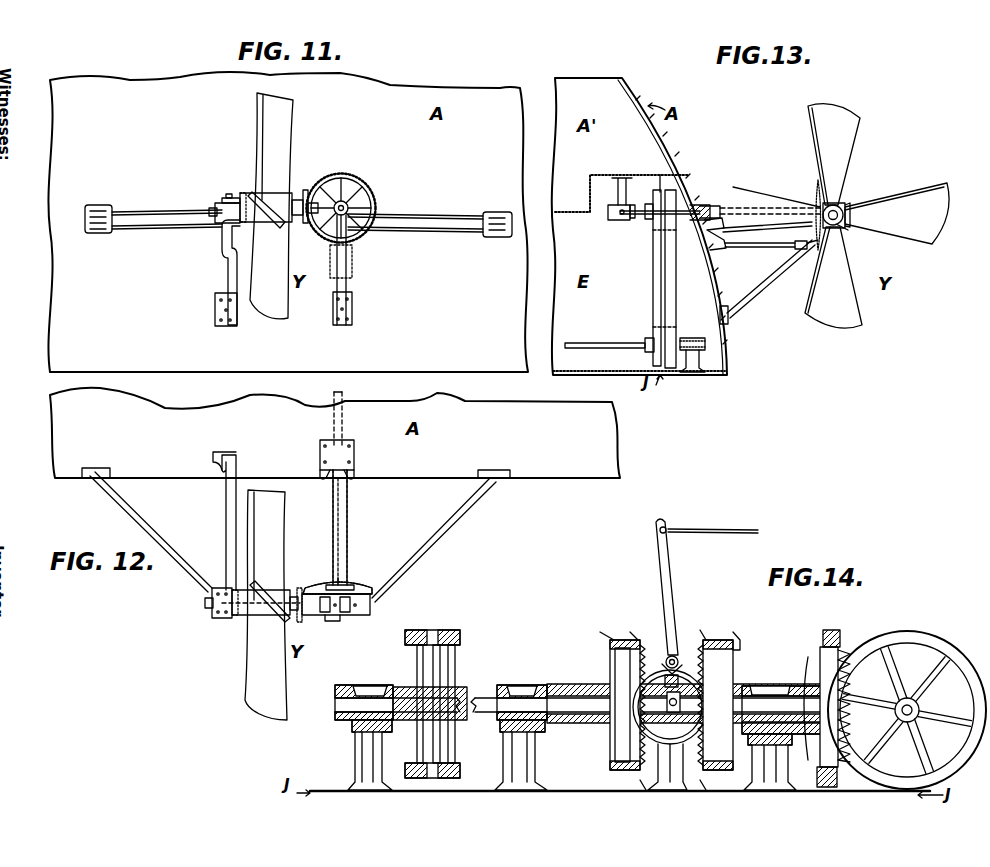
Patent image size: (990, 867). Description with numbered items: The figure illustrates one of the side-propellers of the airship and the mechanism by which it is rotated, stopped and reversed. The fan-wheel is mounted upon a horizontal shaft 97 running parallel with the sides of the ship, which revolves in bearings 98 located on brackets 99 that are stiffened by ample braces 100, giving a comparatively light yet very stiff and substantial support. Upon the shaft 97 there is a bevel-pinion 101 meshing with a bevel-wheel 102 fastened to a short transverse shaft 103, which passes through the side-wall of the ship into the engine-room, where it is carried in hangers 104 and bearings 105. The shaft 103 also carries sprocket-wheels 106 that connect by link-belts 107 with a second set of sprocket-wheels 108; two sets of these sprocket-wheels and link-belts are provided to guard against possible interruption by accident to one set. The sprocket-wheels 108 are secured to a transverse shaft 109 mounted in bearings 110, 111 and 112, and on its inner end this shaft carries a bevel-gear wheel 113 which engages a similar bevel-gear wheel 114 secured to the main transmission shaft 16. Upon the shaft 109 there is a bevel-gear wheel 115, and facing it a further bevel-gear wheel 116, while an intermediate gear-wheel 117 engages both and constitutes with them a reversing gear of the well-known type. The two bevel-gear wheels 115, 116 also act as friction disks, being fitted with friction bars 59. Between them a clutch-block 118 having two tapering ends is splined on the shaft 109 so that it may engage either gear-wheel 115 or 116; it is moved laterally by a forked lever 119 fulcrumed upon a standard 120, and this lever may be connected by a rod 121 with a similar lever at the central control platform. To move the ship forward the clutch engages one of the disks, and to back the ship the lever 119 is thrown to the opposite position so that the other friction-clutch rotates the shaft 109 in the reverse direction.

In FIG. 14, the main power transmission shaft 16 is at (914, 706).
In FIG. 14, the friction bars 59 is at (618, 663).
In FIG. 11, the horizontal shaft 97 is at (214, 206).
In FIG. 13, the horizontal shaft 97 is at (850, 228).
In FIG. 12, the horizontal shaft 97 is at (203, 605).
In FIG. 11, the bearings 98 is at (222, 196).
In FIG. 12, the bearings 98 is at (218, 618).
In FIG. 11, the brackets 99 is at (230, 262).
In FIG. 13, the brackets 99 is at (770, 290).
In FIG. 12, the brackets 99 is at (222, 520).
In FIG. 11, the braces 100 is at (298, 225).
In FIG. 13, the braces 100 is at (770, 243).
In FIG. 12, the braces 100 is at (296, 535).
In FIG. 11, the bevel-pinion 101 is at (304, 190).
In FIG. 13, the bevel-pinion 101 is at (848, 207).
In FIG. 12, the bevel-pinion 101 is at (293, 588).
In FIG. 11, the bevel-wheel 102 is at (355, 208).
In FIG. 13, the bevel-wheel 102 is at (816, 186).
In FIG. 12, the bevel-wheel 102 is at (367, 587).
In FIG. 11, the short transverse shaft 103 is at (309, 231).
In FIG. 13, the short transverse shaft 103 is at (719, 204).
In FIG. 12, the short transverse shaft 103 is at (344, 508).
In FIG. 13, the hangers 104 is at (620, 220).
In FIG. 13, the bearings 105 is at (704, 201).
In FIG. 13, the sprocket-wheels 106 is at (656, 190).
In FIG. 13, the link-belts 107 is at (660, 285).
In FIG. 13, the sprocket-wheels 108 is at (646, 332).
In FIG. 14, the sprocket-wheels 108 is at (430, 692).
In FIG. 13, the transverse shaft 109 is at (605, 335).
In FIG. 14, the transverse shaft 109 is at (337, 703).
In FIG. 13, the bearing 110 is at (695, 347).
In FIG. 14, the bearing 110 is at (373, 681).
In FIG. 14, the bearing 111 is at (528, 686).
In FIG. 14, the bearing 112 is at (772, 692).
In FIG. 14, the bevel-gear wheel 113 is at (826, 640).
In FIG. 14, the bevel-gear wheel 114 is at (909, 641).
In FIG. 14, the bevel-gear wheel 115 is at (737, 647).
In FIG. 14, the bevel-gear wheel 116 is at (605, 655).
In FIG. 14, the intermediate gear-wheel 117 is at (657, 661).
In FIG. 14, the clutch-block 118 is at (690, 690).
In FIG. 14, the forked lever 119 is at (672, 560).
In FIG. 14, the standard 120 is at (636, 782).
In FIG. 14, the rod 121 is at (709, 523).